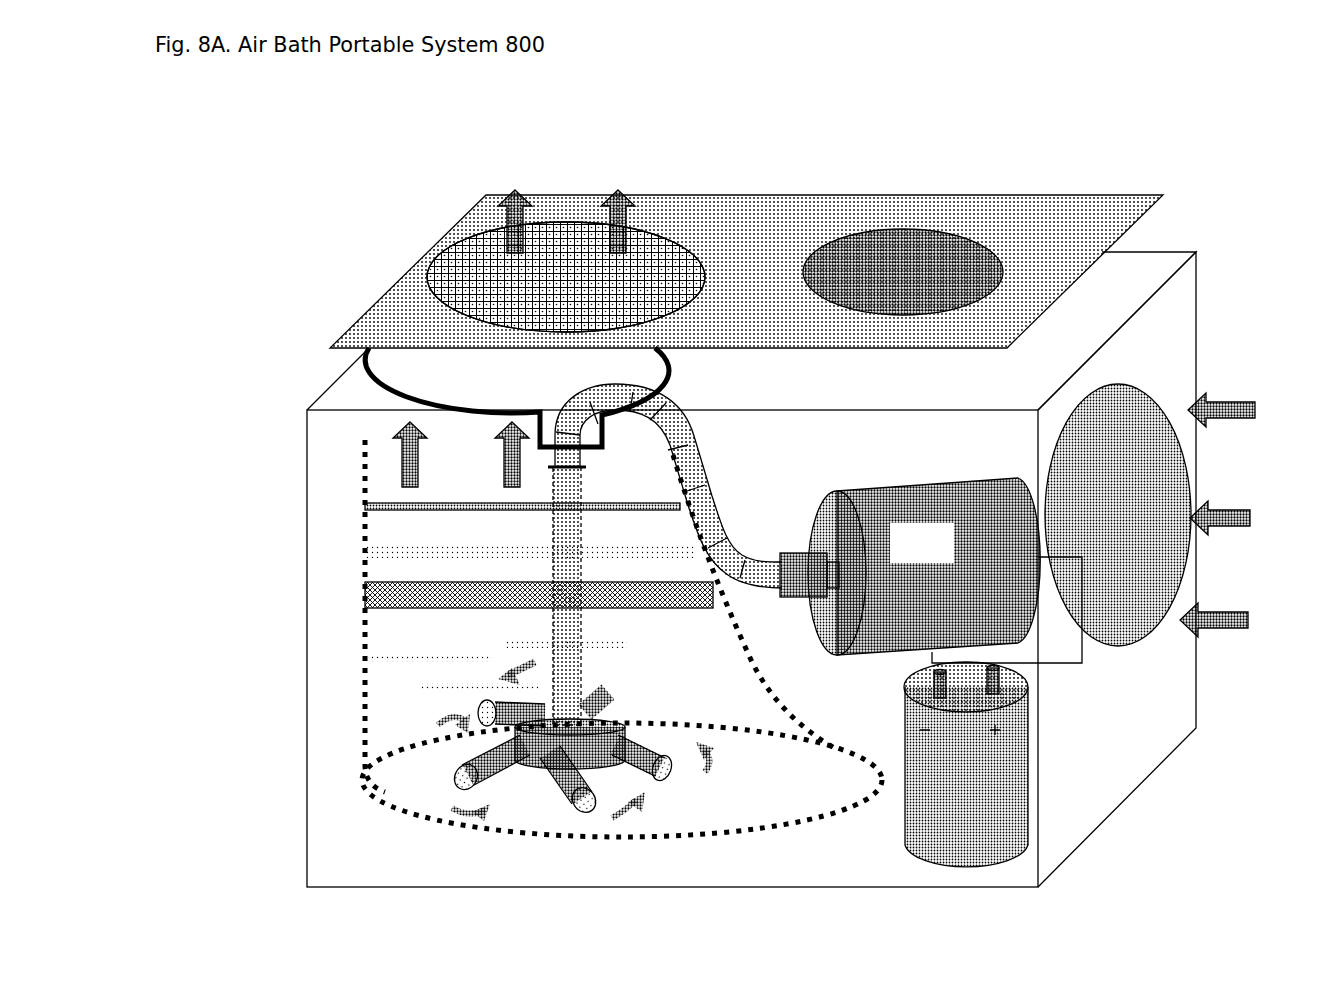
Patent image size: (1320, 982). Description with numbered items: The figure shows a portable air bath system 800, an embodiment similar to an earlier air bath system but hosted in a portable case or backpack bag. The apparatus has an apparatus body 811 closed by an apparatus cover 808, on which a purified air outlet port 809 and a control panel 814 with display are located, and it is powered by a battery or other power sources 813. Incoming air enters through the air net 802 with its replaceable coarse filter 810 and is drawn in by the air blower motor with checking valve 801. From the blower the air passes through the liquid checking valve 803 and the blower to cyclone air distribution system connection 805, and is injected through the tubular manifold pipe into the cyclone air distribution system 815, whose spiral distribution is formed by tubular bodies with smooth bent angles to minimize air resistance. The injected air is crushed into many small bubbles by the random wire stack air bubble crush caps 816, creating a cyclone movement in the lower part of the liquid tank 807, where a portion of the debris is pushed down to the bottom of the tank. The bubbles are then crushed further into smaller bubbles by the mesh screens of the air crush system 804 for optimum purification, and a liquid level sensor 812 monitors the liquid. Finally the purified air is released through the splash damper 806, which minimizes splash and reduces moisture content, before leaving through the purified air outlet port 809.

The portable air bath system 800 is at (784, 541).
The air blower motor with checking valve 801 is at (945, 570).
The air net 802 is at (1244, 515).
The liquid checking valve 803 is at (797, 550).
The air crush system 804 is at (387, 608).
The blower to cyclone air distribution system connection 805 is at (703, 428).
The splash damper 806 is at (385, 502).
The liquid tank 807 is at (360, 745).
The apparatus cover 808 is at (1098, 250).
The purified air outlet port 809 is at (492, 247).
The replaceable coarse filter 810 is at (1193, 487).
The apparatus body 811 is at (1155, 773).
The liquid level sensor 812 is at (352, 557).
The battery or other power sources 813 is at (1017, 763).
The control panel with display 814 is at (968, 243).
The cyclone air distribution system 815 is at (538, 782).
The air bubble crush caps 816 is at (460, 783).